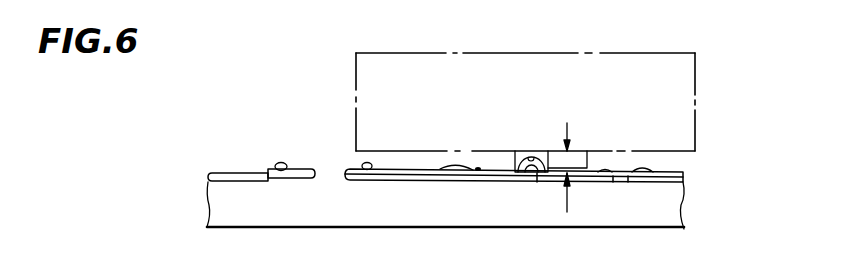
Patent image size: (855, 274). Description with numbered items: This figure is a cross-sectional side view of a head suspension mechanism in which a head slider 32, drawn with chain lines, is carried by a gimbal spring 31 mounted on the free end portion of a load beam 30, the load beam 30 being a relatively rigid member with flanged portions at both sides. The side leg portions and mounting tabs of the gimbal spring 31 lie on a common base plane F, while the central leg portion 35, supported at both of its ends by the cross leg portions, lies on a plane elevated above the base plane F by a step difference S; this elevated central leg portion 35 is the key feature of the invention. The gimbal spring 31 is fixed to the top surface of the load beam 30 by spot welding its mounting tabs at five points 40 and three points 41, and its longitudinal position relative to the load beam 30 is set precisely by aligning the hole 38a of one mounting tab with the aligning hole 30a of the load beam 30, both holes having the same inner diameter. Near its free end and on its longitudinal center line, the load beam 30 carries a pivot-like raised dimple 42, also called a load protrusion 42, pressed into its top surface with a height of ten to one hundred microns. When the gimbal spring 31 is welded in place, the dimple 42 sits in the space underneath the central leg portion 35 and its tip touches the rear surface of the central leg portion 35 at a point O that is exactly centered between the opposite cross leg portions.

The load beam 30 is at (418, 223).
The aligning hole 30a is at (317, 170).
The gimbal spring 31 is at (580, 170).
The head slider 32 is at (657, 53).
The central leg portion 35 is at (519, 151).
The aligning hole 38a is at (338, 172).
The welding points 40 is at (435, 172).
The welding points 41 is at (628, 182).
The dimple 42 is at (537, 182).
The base plane F is at (228, 173).
The contact point O is at (528, 158).
The step difference S is at (577, 167).